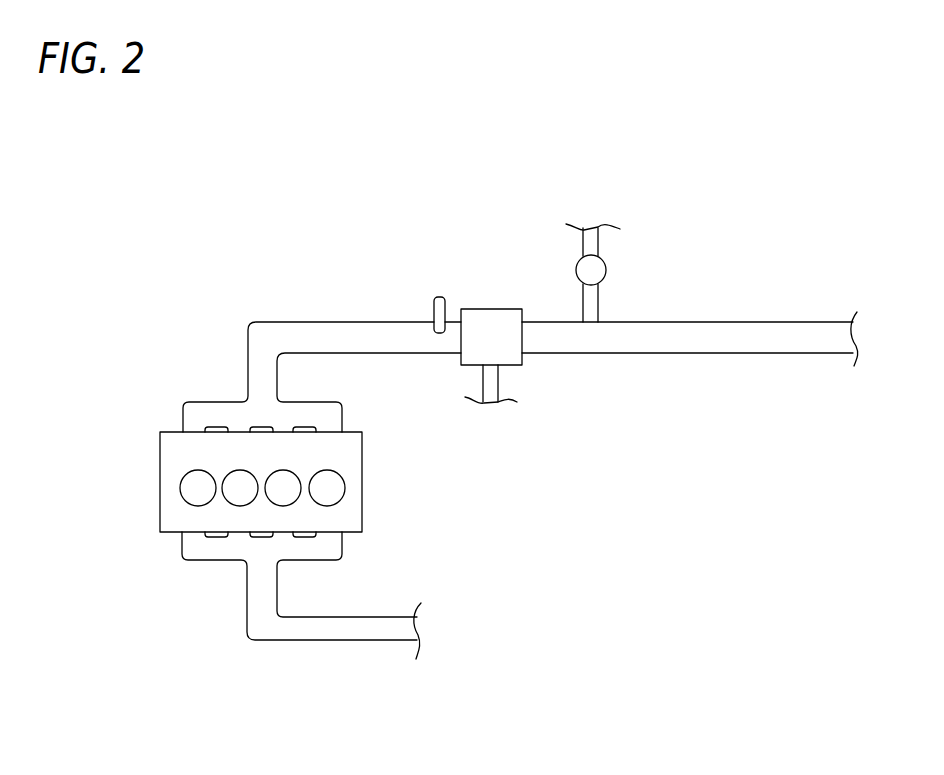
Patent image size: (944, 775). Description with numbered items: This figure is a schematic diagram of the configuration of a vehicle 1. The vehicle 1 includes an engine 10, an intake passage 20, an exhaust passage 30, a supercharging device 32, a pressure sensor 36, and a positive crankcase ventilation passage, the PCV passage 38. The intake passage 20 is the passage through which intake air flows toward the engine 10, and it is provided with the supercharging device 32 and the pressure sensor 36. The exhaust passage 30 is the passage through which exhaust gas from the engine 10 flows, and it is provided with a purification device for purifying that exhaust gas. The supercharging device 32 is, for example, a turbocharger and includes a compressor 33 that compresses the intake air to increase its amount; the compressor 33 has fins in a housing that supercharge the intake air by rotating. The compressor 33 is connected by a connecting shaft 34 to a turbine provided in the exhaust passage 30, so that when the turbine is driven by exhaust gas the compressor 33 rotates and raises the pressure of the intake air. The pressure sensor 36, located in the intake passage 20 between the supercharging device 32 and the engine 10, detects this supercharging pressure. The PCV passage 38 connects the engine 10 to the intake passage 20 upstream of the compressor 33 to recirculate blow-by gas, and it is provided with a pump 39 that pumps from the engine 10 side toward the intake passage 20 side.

The vehicle 1 is at (491, 189).
The engine 10 is at (352, 460).
The intake passage 20 is at (360, 322).
The exhaust passage 30 is at (369, 641).
The supercharging device 32 is at (452, 369).
The compressor 33 is at (508, 309).
The connecting shaft 34 is at (499, 381).
The pressure sensor 36 is at (442, 296).
The PCV passage 38 is at (600, 300).
The pump 39 is at (606, 265).